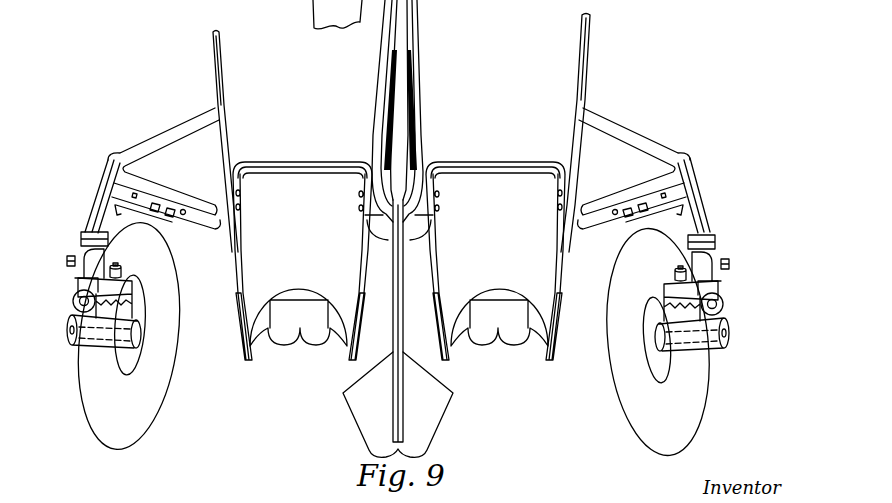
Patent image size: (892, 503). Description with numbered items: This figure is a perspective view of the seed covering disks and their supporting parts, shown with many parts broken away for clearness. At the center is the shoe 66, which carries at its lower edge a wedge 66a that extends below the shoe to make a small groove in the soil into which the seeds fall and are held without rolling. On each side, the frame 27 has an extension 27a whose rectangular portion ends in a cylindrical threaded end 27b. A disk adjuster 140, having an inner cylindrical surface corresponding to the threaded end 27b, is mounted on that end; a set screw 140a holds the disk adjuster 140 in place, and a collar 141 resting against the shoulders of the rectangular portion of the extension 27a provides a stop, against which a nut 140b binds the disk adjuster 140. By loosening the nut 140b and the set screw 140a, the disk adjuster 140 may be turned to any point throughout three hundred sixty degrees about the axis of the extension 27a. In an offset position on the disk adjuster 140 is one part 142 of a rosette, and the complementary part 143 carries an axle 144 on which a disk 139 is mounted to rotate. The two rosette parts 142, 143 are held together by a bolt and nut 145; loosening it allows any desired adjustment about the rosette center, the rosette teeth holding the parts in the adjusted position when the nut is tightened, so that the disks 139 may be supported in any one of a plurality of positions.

The frame 27 is at (216, 76).
The extension of the frame 27a is at (107, 183).
The cylindrical threaded end 27b is at (83, 297).
The shoe 66 is at (257, 262).
The wedge 66a is at (300, 330).
The disk 139 is at (152, 393).
The disk adjuster 140 is at (82, 253).
The set screw 140a is at (67, 262).
The nut 140b is at (80, 289).
The collar 141 is at (85, 233).
The rosette part 142 is at (128, 318).
The complementary rosette part 143 is at (120, 326).
The axle 144 is at (70, 329).
The bolt and nut 145 is at (120, 268).